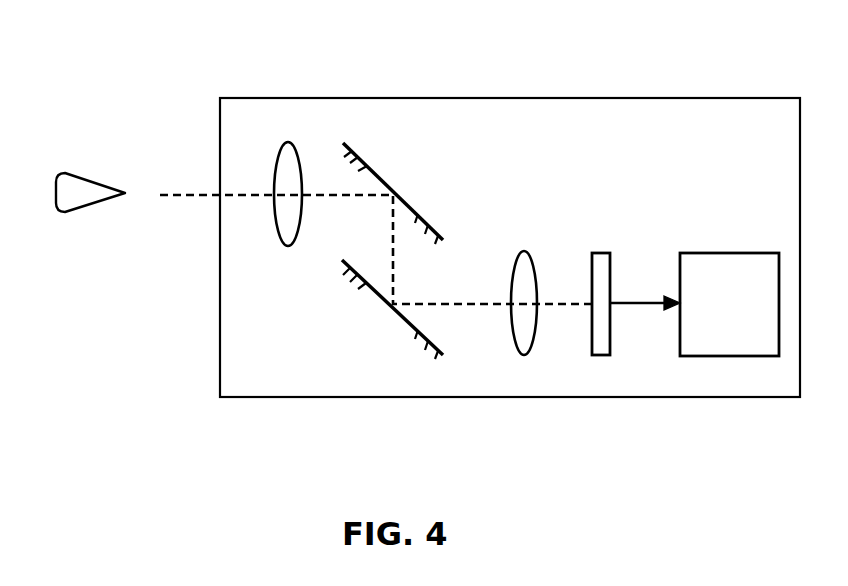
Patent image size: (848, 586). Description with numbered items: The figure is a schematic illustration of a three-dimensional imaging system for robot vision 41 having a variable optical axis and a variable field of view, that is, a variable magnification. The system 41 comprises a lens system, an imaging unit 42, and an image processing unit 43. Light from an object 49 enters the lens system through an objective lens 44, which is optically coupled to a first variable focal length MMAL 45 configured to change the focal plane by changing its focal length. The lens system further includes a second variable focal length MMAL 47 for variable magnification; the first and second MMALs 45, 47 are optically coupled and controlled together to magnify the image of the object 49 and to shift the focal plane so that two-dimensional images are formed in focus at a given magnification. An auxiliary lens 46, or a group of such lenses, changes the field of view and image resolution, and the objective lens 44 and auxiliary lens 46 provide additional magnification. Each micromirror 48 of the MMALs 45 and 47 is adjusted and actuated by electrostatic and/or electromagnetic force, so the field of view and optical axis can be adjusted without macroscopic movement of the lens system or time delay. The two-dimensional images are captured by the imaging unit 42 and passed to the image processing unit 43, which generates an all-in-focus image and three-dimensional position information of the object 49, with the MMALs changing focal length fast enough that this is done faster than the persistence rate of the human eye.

The three-dimensional imaging system for robot vision 41 is at (260, 88).
The imaging unit 42 is at (588, 347).
The image processing unit 43 is at (728, 355).
The objective lens 44 is at (275, 185).
The variable focal length MMAL 45 is at (383, 173).
The auxiliary lens 46 is at (513, 347).
The second variable focal length MMAL 47 is at (385, 306).
The micromirror 48 is at (351, 262).
The object 49 is at (88, 208).